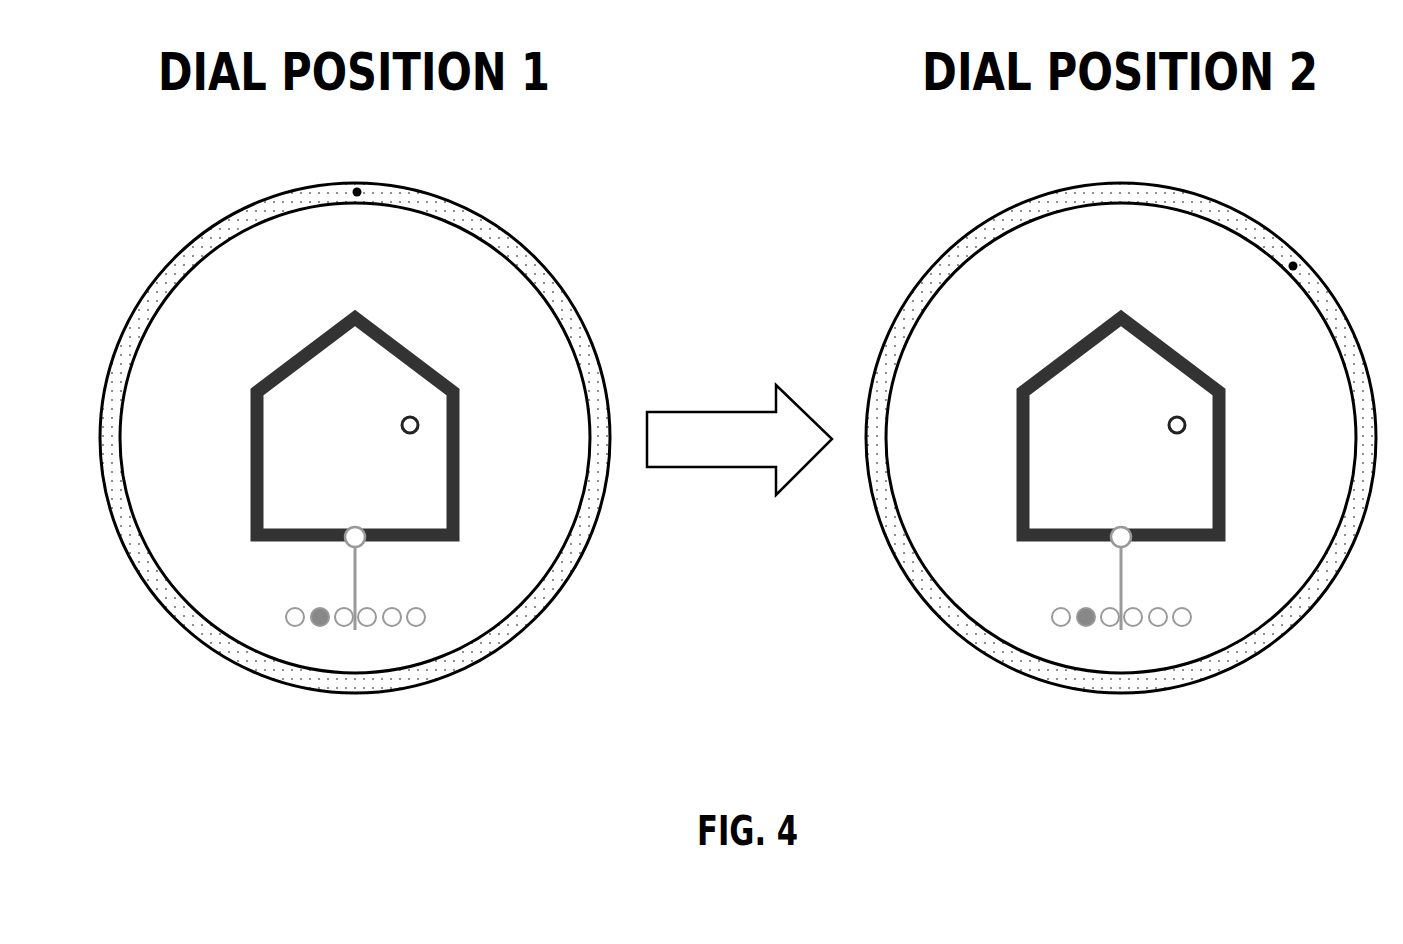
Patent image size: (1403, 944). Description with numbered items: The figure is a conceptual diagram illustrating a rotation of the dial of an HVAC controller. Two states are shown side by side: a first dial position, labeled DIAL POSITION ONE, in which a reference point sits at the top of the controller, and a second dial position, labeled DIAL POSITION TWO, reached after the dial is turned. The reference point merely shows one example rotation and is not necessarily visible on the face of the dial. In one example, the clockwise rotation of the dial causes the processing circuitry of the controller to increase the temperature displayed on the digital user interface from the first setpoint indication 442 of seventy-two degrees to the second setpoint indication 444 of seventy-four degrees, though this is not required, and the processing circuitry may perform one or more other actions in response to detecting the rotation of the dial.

The first setpoint temperature indication (72°) 442 is at (386, 397).
The second setpoint temperature indication (74°) 444 is at (1151, 397).